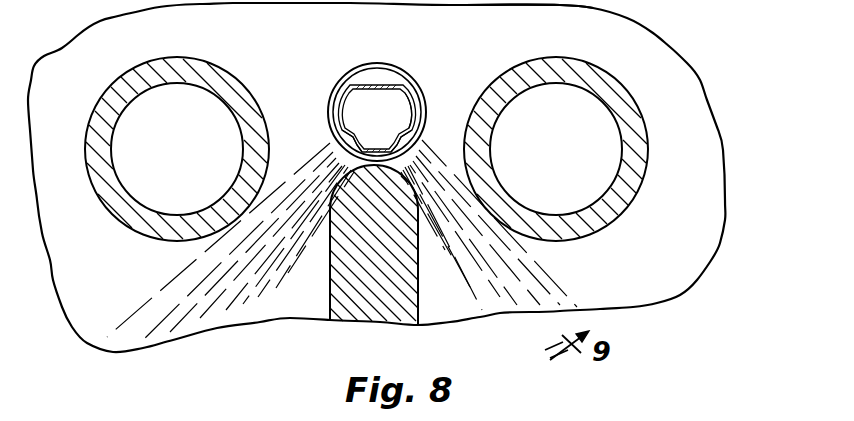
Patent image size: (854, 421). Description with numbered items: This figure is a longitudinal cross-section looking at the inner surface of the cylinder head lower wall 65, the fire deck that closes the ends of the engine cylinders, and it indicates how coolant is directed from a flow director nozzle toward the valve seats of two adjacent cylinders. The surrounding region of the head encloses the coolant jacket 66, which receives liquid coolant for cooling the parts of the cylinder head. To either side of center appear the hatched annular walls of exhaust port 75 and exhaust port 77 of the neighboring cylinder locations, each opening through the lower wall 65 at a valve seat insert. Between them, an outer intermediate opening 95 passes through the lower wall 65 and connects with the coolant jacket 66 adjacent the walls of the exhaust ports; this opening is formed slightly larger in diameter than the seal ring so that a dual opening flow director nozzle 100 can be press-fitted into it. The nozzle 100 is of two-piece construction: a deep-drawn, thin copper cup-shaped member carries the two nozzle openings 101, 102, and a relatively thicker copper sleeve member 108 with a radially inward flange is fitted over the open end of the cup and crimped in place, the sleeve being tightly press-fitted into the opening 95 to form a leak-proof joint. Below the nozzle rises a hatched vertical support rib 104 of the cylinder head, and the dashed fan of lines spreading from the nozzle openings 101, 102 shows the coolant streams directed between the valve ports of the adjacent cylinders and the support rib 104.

The lower wall 65 is at (685, 267).
The coolant jacket 66 is at (672, 68).
The exhaust port 75 is at (136, 98).
The exhaust port 77 is at (617, 163).
The outer intermediate opening 95 is at (394, 70).
The dual opening flow director nozzle 100 is at (375, 79).
The nozzle opening 101 is at (344, 136).
The nozzle opening 102 is at (412, 131).
The vertical support rib 104 is at (342, 283).
The copper sleeve member 108 is at (411, 95).